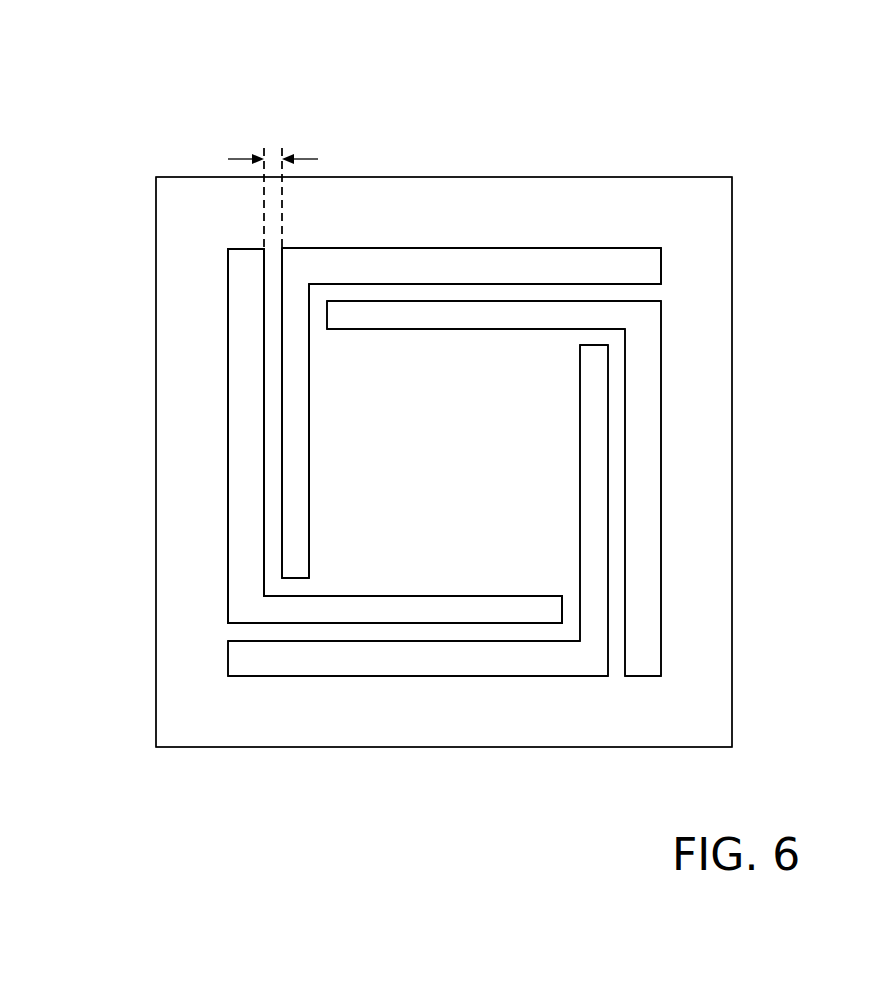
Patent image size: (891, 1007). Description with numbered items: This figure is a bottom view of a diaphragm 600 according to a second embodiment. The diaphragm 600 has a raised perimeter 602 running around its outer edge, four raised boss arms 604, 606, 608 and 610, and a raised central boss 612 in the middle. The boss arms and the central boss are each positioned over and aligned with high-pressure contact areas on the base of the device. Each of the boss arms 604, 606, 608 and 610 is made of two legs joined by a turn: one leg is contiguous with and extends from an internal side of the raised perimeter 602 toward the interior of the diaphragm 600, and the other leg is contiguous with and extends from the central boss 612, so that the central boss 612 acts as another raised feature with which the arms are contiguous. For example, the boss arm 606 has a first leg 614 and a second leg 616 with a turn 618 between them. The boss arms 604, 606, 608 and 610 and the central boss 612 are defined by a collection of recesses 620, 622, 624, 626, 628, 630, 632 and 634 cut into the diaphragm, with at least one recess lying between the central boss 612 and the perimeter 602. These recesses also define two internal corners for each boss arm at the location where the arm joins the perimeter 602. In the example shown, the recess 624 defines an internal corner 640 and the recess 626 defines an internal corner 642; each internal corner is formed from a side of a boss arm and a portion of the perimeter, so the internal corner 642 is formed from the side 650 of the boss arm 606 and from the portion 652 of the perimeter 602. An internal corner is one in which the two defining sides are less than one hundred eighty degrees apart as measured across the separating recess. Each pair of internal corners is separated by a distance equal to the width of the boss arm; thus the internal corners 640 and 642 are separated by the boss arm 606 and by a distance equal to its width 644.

The diaphragm 600 is at (801, 124).
The raised perimeter 602 is at (672, 444).
The raised boss arm 604 is at (423, 290).
The raised boss arm 606 is at (266, 381).
The raised boss arm 608 is at (419, 632).
The raised boss arm 610 is at (620, 380).
The raised central boss 612 is at (415, 463).
The leg 614 is at (276, 439).
The leg 616 is at (297, 591).
The turn 618 is at (258, 600).
The recess 620 is at (512, 262).
The recess 622 is at (403, 312).
The recess 624 is at (246, 306).
The recess 626 is at (293, 508).
The recess 628 is at (352, 672).
The recess 630 is at (498, 615).
The recess 632 is at (637, 602).
The recess 634 is at (592, 540).
The internal corner 640 is at (247, 250).
The internal corner 642 is at (284, 250).
The width 644 is at (228, 159).
The side 650 is at (282, 281).
The portion 652 is at (344, 262).